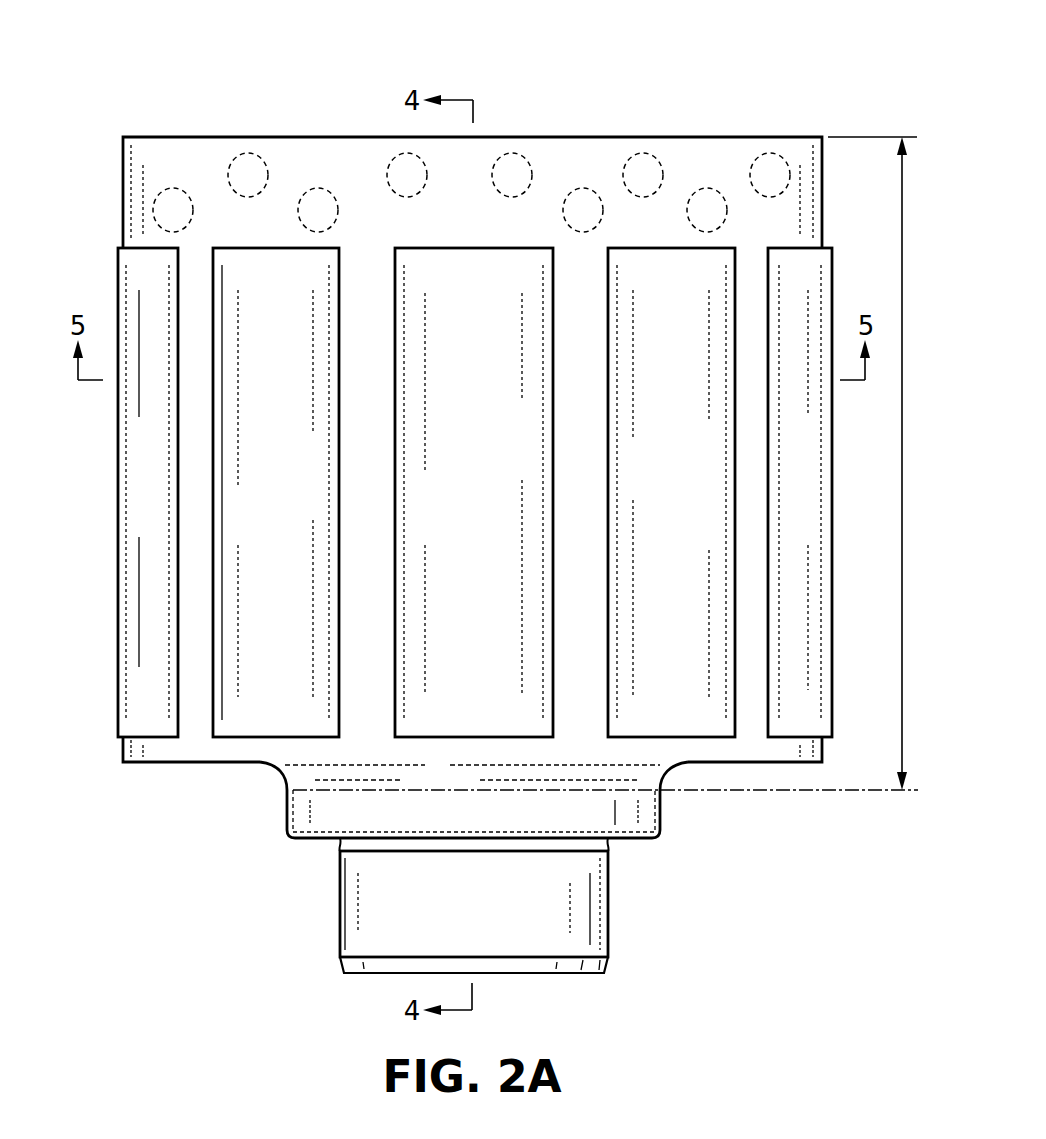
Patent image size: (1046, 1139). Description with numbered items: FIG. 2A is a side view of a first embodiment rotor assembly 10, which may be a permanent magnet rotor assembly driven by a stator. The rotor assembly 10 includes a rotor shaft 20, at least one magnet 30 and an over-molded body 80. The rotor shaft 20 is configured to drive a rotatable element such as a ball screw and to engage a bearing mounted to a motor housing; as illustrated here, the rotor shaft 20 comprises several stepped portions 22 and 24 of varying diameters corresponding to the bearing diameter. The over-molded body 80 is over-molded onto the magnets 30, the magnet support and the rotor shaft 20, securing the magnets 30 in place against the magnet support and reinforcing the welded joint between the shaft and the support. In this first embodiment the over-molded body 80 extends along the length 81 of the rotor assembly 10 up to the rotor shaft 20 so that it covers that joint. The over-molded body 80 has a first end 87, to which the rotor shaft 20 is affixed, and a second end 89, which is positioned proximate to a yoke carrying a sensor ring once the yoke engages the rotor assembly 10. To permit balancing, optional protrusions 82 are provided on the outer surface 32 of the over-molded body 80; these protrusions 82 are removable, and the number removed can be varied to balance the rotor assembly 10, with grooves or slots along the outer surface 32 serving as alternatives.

The rotor assembly 10 is at (110, 80).
The rotor shaft 20 is at (300, 815).
The stepped portion 22 is at (648, 812).
The stepped portion 24 is at (580, 893).
The magnet 30 is at (150, 608).
The outer surface 32 is at (145, 235).
The over-molded body 80 is at (182, 503).
The length 81 is at (905, 464).
The protrusion 82 is at (152, 214).
The first end 87 is at (126, 742).
The second end 89 is at (138, 153).